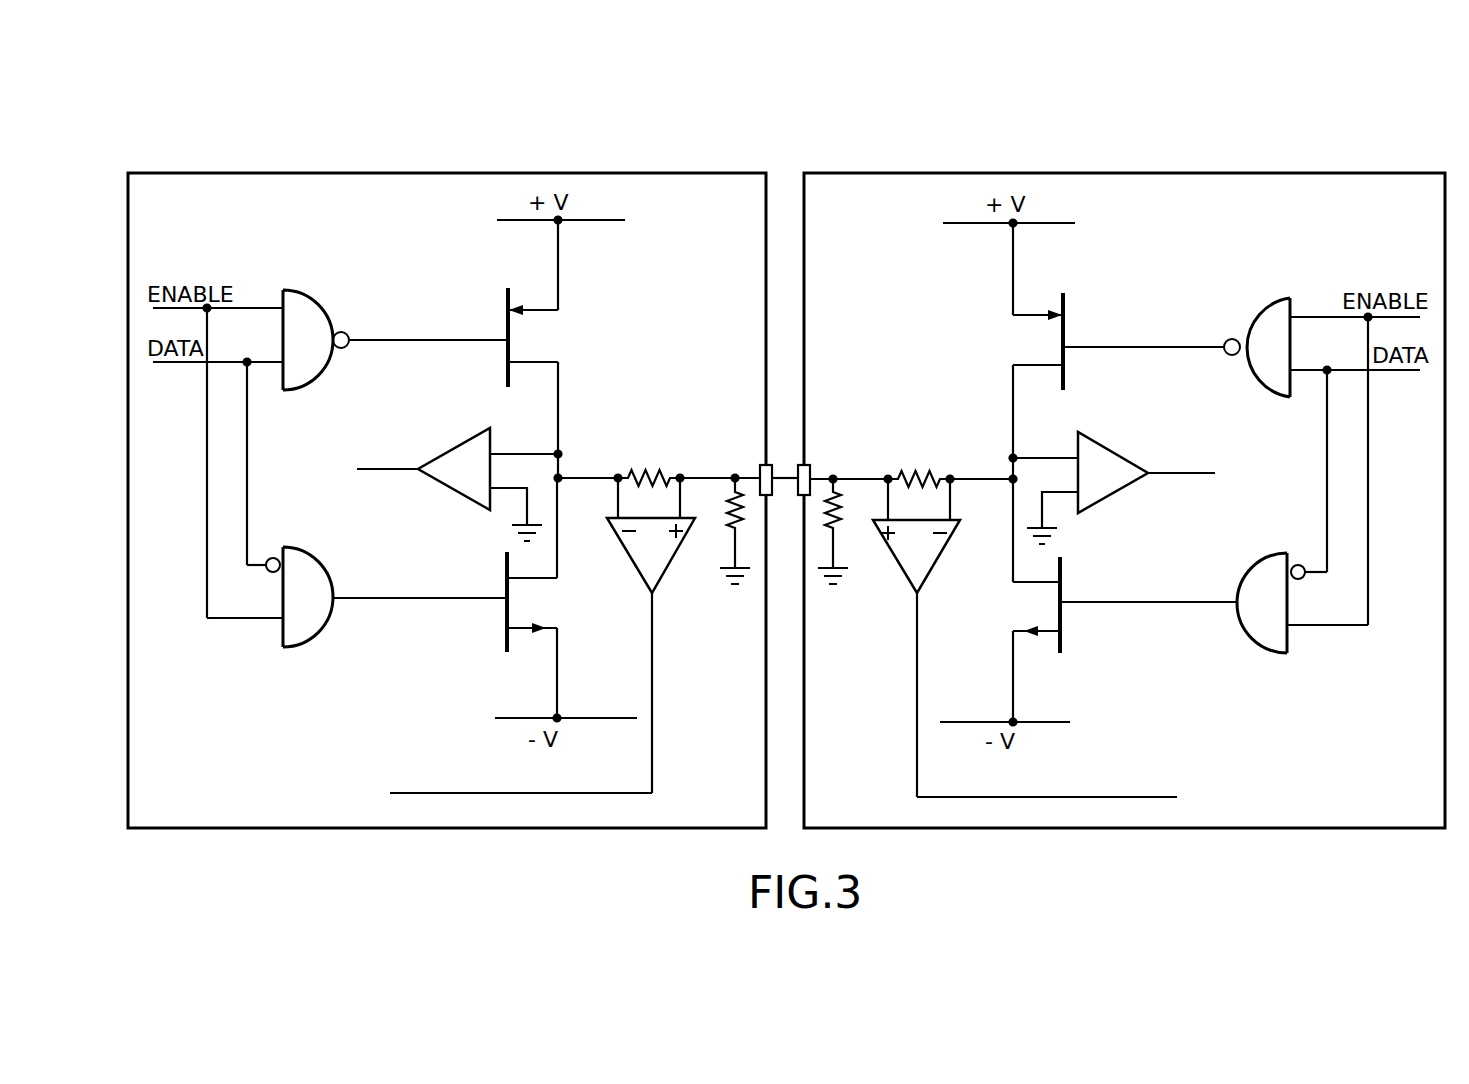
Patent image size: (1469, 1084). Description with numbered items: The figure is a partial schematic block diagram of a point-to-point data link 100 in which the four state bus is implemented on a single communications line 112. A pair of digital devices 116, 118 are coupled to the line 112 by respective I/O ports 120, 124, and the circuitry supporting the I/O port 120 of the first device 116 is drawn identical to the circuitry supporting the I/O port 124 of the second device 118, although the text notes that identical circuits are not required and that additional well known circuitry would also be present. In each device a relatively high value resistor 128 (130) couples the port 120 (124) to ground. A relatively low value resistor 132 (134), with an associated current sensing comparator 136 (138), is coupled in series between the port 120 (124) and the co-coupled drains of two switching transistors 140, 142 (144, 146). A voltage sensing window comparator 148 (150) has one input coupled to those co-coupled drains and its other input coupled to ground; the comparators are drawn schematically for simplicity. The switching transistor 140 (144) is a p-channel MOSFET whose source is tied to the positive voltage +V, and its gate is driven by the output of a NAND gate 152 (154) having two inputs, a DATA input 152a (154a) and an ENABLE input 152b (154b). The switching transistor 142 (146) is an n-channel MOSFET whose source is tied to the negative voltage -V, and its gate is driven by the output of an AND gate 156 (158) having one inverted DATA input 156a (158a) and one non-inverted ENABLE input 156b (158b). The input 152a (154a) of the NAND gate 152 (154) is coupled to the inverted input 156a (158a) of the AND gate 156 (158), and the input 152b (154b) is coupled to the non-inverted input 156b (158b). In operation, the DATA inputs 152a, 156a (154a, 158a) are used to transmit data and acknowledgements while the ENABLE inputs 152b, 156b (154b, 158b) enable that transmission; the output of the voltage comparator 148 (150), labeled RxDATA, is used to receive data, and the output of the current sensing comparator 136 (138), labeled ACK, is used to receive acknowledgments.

The point-to-point data link 100 is at (786, 459).
The communications line 112 is at (790, 466).
The digital device 116 is at (410, 173).
The digital device 118 is at (1120, 173).
The I/O port 120 is at (758, 468).
The I/O port 124 is at (815, 470).
The high value resistor 128 is at (718, 486).
The high value resistor 130 is at (846, 520).
The low value resistor 132 is at (628, 470).
The low value resistor 134 is at (905, 468).
The current sensing comparator 136 is at (670, 565).
The current sensing comparator 138 is at (945, 538).
The switching transistor 140 is at (540, 325).
The switching transistor 142 is at (542, 598).
The switching transistor 144 is at (1037, 333).
The switching transistor 146 is at (1036, 610).
The voltage sensing comparator 148 is at (440, 485).
The voltage sensing comparator 150 is at (1113, 497).
The NAND gate 152 is at (330, 334).
The DATA input 152a is at (258, 368).
The ENABLE input 152b is at (262, 308).
The NAND gate 154 is at (1241, 338).
The DATA input 154a is at (1304, 375).
The ENABLE input 154b is at (1318, 316).
The AND gate 156 is at (357, 589).
The inverted input 156a is at (274, 557).
The non-inverted input 156b is at (238, 620).
The AND gate 158 is at (1221, 598).
The inverted input 158a is at (1316, 568).
The non-inverted input 158b is at (1333, 626).